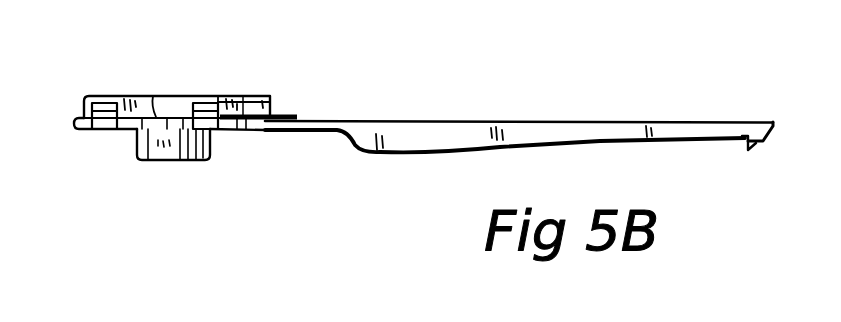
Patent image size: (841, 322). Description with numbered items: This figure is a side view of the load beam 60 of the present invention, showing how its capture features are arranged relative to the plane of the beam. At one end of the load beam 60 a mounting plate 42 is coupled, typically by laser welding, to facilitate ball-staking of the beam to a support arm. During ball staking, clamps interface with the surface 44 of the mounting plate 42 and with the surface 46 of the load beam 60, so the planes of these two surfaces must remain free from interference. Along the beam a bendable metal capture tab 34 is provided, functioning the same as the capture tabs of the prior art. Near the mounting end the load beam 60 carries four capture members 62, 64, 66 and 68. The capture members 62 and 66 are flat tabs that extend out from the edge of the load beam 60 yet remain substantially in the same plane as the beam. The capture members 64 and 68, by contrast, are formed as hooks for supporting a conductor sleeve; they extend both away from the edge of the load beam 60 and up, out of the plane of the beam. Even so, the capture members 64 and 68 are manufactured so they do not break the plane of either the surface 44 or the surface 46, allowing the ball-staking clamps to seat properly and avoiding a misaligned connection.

The capture tab 34 is at (739, 142).
The mounting plate 42 is at (258, 107).
The surface 44 is at (88, 96).
The surface 46 is at (100, 129).
The load beam 60 is at (312, 131).
The capture member 62 is at (244, 131).
The capture member 64 is at (204, 103).
The capture member 66 is at (153, 96).
The capture member 68 is at (101, 103).